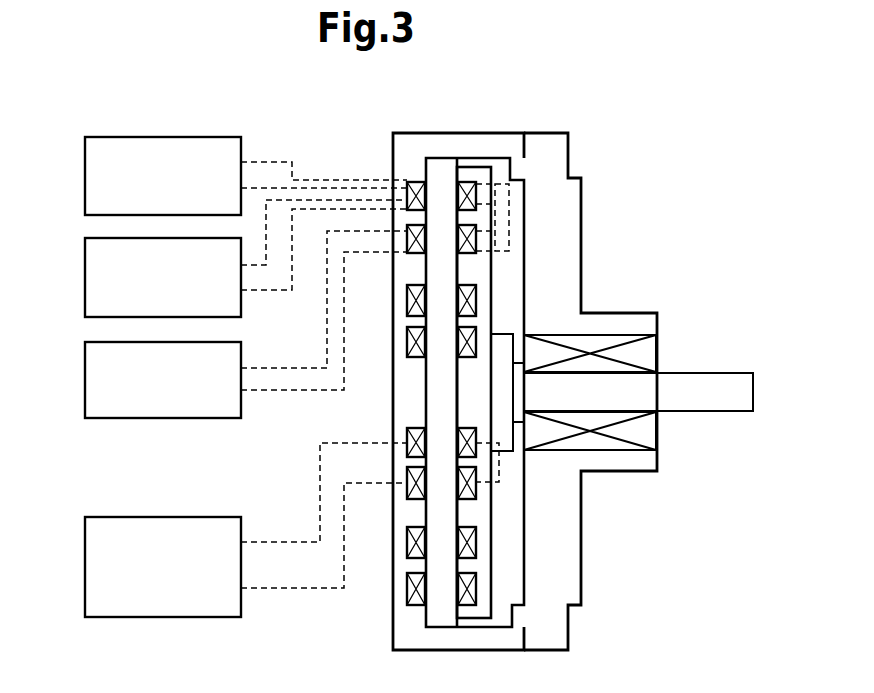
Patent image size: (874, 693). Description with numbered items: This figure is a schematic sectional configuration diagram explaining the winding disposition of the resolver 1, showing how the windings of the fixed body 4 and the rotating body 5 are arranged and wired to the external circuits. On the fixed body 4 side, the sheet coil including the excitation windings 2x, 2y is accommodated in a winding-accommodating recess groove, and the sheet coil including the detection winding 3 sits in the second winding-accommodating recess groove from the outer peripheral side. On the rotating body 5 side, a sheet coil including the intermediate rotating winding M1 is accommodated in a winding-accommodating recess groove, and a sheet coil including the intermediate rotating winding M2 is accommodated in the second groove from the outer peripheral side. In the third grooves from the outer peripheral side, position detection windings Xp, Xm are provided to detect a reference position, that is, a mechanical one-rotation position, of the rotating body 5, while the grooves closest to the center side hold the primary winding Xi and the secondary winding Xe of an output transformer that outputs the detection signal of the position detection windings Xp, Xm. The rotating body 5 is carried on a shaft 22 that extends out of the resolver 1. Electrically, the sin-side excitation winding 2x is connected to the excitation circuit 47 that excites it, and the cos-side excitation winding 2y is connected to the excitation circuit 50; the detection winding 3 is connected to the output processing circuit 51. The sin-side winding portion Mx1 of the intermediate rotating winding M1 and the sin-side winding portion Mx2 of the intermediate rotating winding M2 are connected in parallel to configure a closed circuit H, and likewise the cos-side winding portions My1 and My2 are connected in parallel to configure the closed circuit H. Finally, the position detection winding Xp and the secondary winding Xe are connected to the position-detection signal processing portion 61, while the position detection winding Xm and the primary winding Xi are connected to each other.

The resolver 1 is at (628, 385).
The detection winding 3 is at (420, 362).
The fixed body 4 is at (389, 594).
The rotating body 5 is at (531, 356).
The shaft 22 is at (707, 413).
The excitation circuit 47 is at (172, 137).
The excitation circuit 50 is at (85, 267).
The output processing circuit 51 is at (143, 418).
The position-detection signal processing portion 61 is at (189, 514).
The excitation winding 2x is at (371, 351).
The excitation winding 2y is at (417, 181).
The winding portion Mx1 is at (542, 349).
The winding portion My1 is at (468, 182).
The winding portion Mx2 is at (605, 259).
The winding portion My2 is at (470, 259).
The primary winding Xi is at (472, 430).
The secondary winding Xe is at (407, 438).
The position detection winding Xp is at (458, 498).
The position detection winding Xm is at (477, 489).
The closed circuit H is at (502, 178).
The intermediate rotating winding M1 is at (538, 194).
The intermediate rotating winding M2 is at (538, 237).